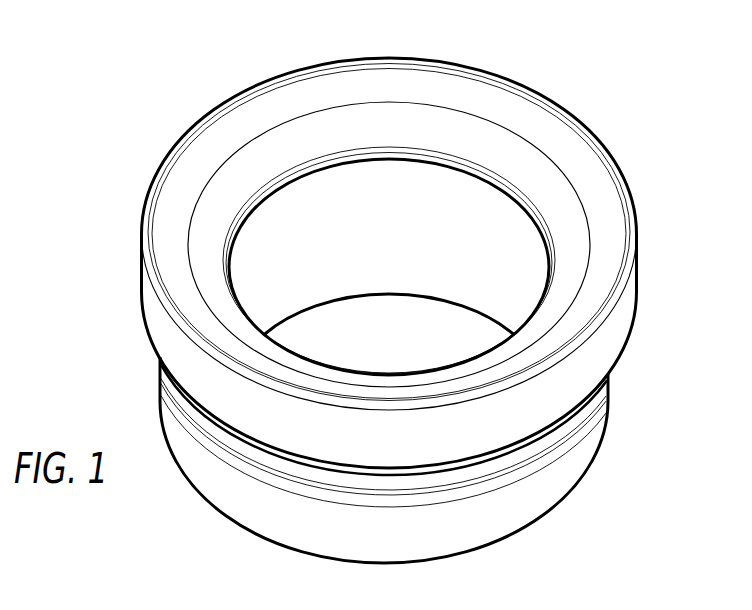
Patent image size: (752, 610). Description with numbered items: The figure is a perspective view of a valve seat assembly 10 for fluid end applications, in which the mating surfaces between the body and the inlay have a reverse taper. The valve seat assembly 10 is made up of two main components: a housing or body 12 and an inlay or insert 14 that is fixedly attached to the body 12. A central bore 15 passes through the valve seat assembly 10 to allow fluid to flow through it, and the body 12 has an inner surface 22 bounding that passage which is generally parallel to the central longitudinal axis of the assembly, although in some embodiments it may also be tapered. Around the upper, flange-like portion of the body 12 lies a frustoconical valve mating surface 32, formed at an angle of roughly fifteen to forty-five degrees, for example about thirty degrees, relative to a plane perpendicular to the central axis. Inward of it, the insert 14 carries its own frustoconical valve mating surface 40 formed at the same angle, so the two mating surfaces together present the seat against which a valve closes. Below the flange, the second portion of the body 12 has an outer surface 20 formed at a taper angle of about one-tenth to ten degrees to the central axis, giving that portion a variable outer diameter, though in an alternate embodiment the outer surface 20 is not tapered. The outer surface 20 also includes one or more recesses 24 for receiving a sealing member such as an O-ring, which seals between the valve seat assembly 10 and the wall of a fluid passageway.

The valve seat assembly 10 is at (375, 290).
The body 12 is at (130, 247).
The frustoconical valve mating surface 32 is at (470, 100).
The frustoconical valve mating surface 40 is at (556, 200).
The insert 14 is at (493, 156).
The inner surface 22 is at (397, 240).
The central bore 15 is at (432, 339).
The recess 24 is at (573, 424).
The outer surface 20 is at (583, 446).